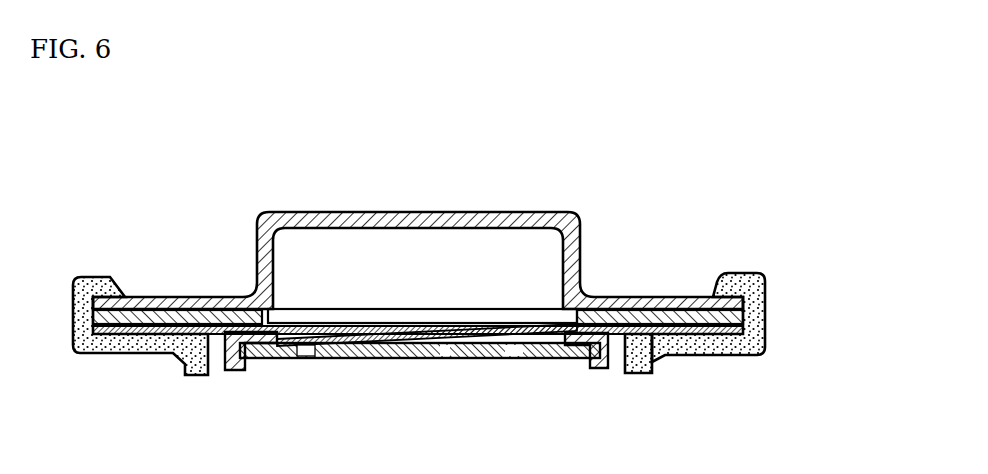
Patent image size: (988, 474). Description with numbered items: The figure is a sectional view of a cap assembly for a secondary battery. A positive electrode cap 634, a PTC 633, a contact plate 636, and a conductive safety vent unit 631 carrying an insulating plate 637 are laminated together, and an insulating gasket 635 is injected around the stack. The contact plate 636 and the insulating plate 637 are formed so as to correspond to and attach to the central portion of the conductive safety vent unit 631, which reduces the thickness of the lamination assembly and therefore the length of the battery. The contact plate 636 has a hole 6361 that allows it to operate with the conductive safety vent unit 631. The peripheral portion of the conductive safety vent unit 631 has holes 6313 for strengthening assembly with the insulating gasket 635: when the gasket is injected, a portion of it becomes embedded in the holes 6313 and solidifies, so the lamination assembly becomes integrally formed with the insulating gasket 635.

The conductive safety vent unit 631 is at (503, 360).
The PTC 633 is at (637, 297).
The positive electrode cap 634 is at (393, 209).
The insulating gasket 635 is at (760, 302).
The contact plate 636 is at (400, 360).
The hole 6361 is at (303, 360).
The insulating plate 637 is at (606, 370).
The holes 6313 is at (690, 352).